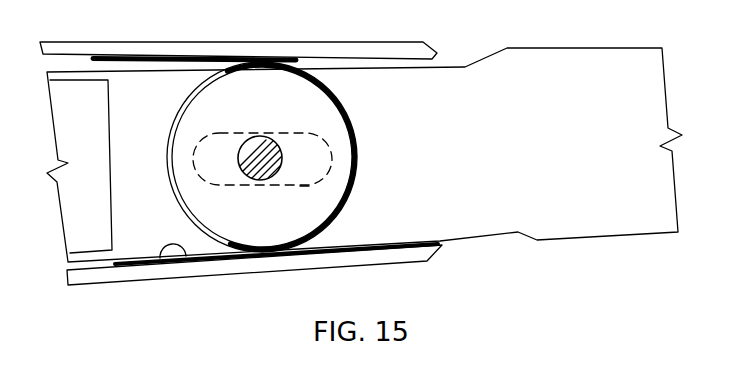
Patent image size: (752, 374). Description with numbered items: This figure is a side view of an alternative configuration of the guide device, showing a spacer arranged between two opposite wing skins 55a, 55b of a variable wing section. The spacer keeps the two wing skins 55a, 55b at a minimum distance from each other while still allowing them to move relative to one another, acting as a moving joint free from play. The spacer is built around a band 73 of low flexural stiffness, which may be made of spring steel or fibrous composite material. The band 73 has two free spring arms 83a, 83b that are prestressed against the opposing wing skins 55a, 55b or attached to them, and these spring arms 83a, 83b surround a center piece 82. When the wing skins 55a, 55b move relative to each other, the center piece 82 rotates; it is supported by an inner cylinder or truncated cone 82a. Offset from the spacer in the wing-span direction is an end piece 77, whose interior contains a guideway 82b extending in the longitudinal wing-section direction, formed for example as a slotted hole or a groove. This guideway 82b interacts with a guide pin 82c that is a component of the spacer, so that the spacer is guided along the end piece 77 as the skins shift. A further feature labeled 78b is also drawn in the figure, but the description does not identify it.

The end piece 77 is at (595, 56).
The wing skin 55a is at (57, 45).
The wing skin 55b is at (422, 256).
The free spring arm 83a is at (128, 62).
The free spring arm 83b is at (197, 262).
The band 73 is at (358, 148).
The center piece 82 is at (352, 107).
The inner cylinder or truncated cone 82a is at (173, 193).
The guideway 82b is at (287, 131).
The guide pin 82c is at (248, 132).
The slot end portion 78b is at (313, 188).